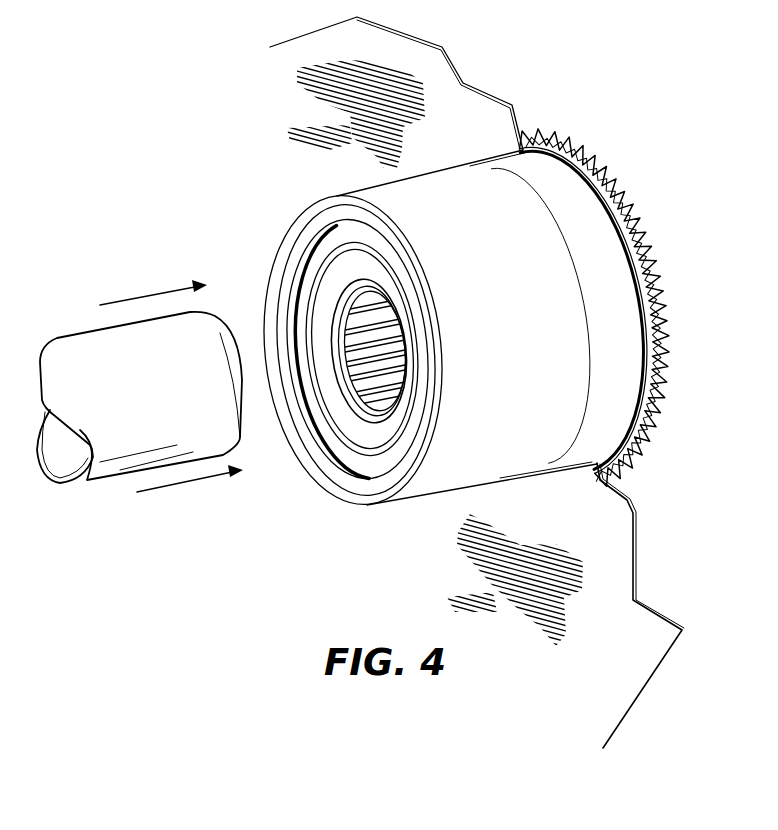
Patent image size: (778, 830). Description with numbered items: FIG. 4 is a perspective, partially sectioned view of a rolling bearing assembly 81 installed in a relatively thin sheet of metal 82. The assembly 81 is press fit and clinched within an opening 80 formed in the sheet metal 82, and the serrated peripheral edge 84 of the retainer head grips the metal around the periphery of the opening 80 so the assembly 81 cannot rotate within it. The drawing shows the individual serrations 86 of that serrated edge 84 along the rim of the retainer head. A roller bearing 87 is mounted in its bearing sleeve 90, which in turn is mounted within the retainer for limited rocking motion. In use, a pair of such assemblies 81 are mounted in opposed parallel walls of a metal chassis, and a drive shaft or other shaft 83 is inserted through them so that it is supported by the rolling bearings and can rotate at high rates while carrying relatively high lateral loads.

The opening 80 is at (523, 150).
The rolling bearing assembly 81 is at (570, 263).
The sheet of metal 82 is at (483, 127).
The shaft 83 is at (73, 348).
The serrated peripheral edge 84 is at (663, 352).
The gear teeth 86 is at (647, 273).
The roller bearing 87 is at (337, 353).
The bearing sleeve 90 is at (343, 450).